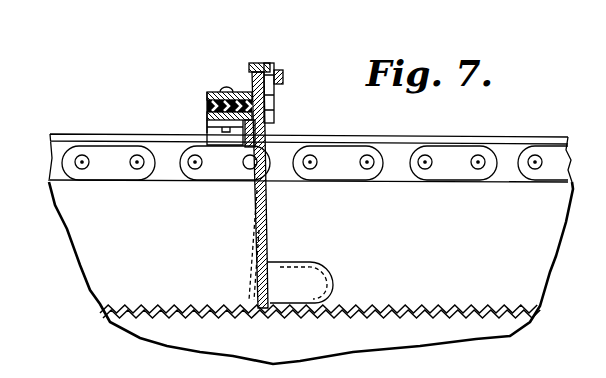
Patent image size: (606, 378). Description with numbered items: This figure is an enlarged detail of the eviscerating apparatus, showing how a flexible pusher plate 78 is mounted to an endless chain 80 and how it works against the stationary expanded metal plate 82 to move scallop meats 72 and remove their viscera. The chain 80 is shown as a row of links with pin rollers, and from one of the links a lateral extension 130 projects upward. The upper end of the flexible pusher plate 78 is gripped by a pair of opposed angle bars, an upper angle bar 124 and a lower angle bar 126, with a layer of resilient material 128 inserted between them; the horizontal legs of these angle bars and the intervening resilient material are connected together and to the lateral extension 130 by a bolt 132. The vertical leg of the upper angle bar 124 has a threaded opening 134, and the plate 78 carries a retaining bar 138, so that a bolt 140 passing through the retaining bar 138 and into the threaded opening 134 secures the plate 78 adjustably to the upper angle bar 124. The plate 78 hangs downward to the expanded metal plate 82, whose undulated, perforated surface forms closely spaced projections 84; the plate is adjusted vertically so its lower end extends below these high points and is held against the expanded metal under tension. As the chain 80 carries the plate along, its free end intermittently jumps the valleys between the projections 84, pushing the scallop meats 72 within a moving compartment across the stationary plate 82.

The scallop meats 72 is at (303, 273).
The flexible pusher plate 78 is at (267, 223).
The endless chain 80 is at (448, 168).
The expanded metal plate 82 is at (410, 304).
The projections 84 is at (385, 306).
The upper angle bar 124 is at (213, 92).
The lower angle bar 126 is at (208, 117).
The layer of resilient material 128 is at (207, 105).
The lateral extension 130 is at (218, 127).
The bolt 132 is at (227, 88).
The threaded opening 134 is at (253, 63).
The retaining bar 138 is at (270, 100).
The bolt 140 is at (278, 74).